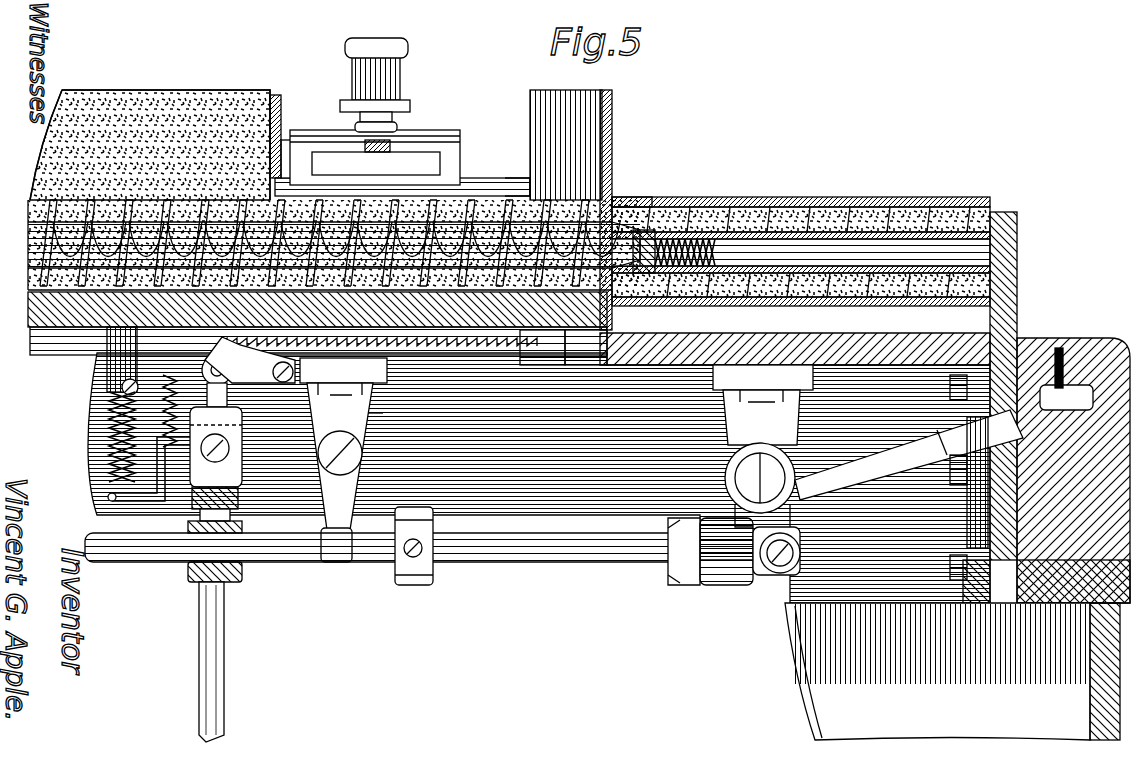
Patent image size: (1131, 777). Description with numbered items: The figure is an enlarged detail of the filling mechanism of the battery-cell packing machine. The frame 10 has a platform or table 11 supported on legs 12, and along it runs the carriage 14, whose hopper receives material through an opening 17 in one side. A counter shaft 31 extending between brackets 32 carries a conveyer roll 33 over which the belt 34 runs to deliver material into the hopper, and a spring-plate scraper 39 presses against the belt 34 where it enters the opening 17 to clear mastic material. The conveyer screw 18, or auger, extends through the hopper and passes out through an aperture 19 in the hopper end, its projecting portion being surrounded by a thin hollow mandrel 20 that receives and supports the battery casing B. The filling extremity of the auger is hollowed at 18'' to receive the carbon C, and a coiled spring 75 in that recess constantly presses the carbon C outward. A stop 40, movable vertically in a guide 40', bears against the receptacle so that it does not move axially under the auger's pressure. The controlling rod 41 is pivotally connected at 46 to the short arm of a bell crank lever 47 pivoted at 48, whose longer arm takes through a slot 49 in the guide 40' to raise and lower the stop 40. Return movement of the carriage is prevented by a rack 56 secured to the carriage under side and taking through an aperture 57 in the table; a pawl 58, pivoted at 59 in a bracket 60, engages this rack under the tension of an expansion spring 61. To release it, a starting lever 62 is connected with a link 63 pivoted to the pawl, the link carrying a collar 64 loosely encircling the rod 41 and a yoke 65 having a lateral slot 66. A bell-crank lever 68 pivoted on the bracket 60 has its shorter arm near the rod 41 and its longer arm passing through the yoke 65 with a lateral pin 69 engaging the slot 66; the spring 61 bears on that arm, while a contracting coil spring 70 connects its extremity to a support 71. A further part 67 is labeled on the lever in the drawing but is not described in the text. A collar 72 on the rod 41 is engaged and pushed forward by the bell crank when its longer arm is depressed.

The frame 10 is at (510, 465).
The platform or table 11 is at (653, 347).
The legs 12 is at (797, 697).
The carriage 14 is at (473, 315).
The opening 17 is at (530, 123).
The conveyer screw 18 is at (334, 228).
The hollow filling extremity 18'' is at (721, 202).
The aperture 19 is at (613, 200).
The hollow mandrel 20 is at (657, 203).
The counter shaft 31 is at (282, 147).
The brackets 32 is at (460, 160).
The conveyer roll 33 is at (277, 100).
The belt 34 is at (223, 93).
The scraper 39 is at (513, 180).
The stop or abutment 40 is at (1029, 386).
The guide 40' is at (1073, 470).
The controlling rod 41 is at (558, 550).
The pivotal connection 46 is at (777, 572).
The bell crank lever 47 is at (857, 465).
The pivot 48 is at (750, 475).
The slot 49 is at (970, 512).
The rack 56 is at (500, 345).
The aperture 57 is at (580, 345).
The pawl 58 is at (258, 386).
The pivot 59 is at (377, 364).
The bracket 60 is at (392, 417).
The expansion spring 61 is at (197, 401).
The starting lever 62 is at (237, 392).
The link 63 is at (222, 642).
The collar 64 is at (240, 572).
The yoke 65 is at (245, 482).
The lateral slot 66 is at (300, 423).
The lever head 67 is at (375, 415).
The bell-crank lever 68 is at (360, 496).
The lateral pin 69 is at (150, 486).
The contracting coil spring 70 is at (110, 430).
The support 71 is at (110, 367).
The collar 72 is at (420, 520).
The coiled spring 75 is at (713, 245).
The battery casing B is at (887, 200).
The carbon C is at (833, 202).